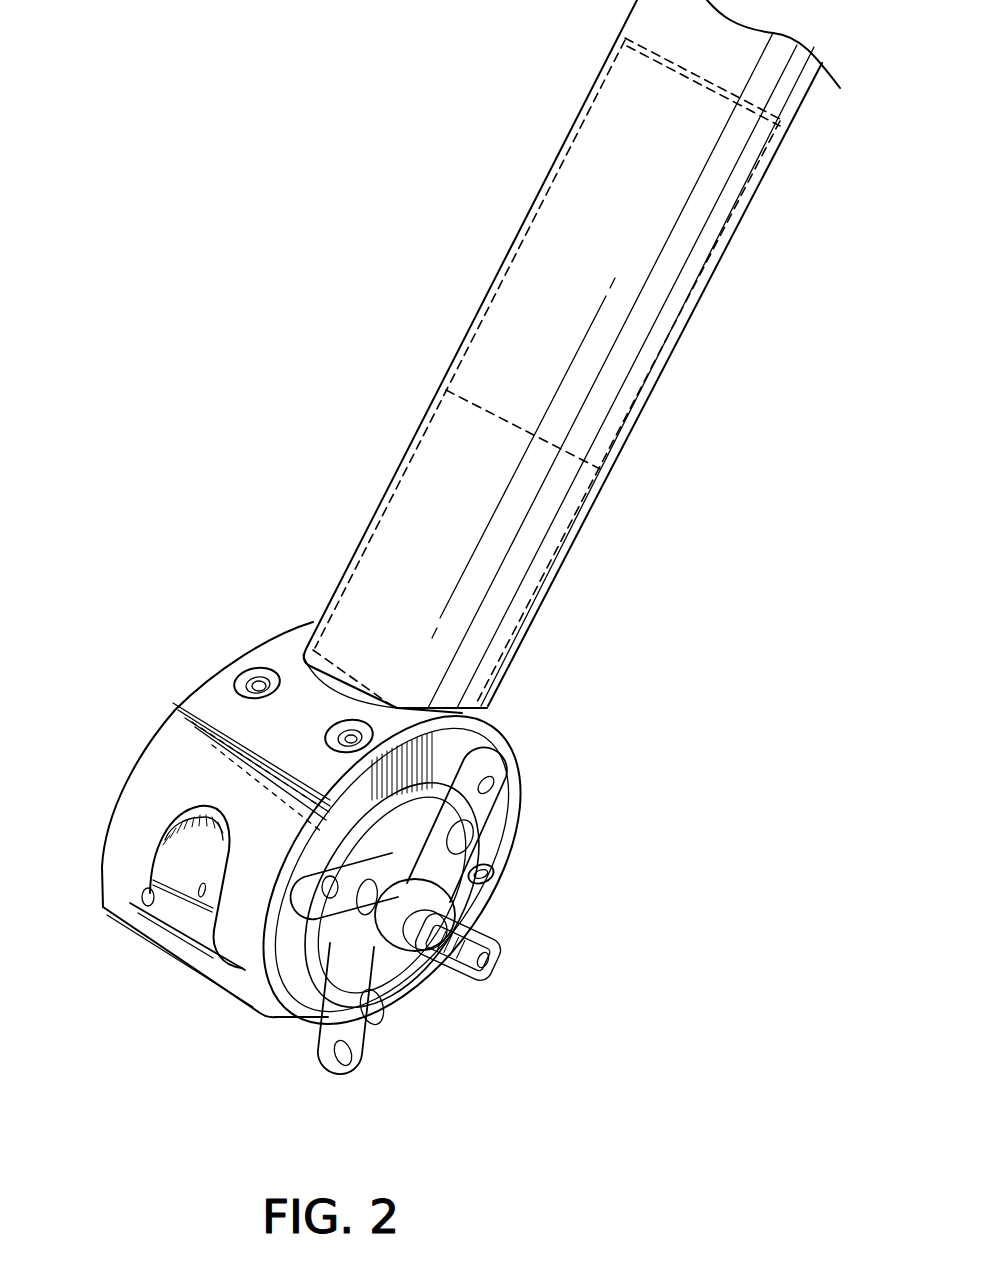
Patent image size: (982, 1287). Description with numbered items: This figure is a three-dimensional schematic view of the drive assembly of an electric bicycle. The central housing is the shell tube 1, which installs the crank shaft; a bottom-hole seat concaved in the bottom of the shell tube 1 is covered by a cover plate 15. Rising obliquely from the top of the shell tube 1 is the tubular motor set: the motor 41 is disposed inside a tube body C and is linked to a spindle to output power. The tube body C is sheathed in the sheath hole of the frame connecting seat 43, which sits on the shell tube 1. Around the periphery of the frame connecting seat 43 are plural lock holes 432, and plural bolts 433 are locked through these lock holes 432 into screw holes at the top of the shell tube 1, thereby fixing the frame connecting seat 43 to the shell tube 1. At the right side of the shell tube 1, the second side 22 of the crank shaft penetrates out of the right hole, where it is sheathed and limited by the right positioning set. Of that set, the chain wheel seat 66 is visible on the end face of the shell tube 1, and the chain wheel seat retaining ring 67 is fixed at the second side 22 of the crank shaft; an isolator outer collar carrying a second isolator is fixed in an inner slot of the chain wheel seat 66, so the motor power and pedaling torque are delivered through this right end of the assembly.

The tube body C is at (481, 305).
The motor 41 is at (418, 493).
The frame connecting seat 43 is at (208, 710).
The lock holes 432 is at (247, 672).
The bolts 433 is at (263, 677).
The shell tube 1 is at (200, 853).
The cover plate 15 is at (178, 945).
The chain wheel seat 66 is at (393, 980).
The second side 22 is at (423, 947).
The chain wheel seat retaining ring 67 is at (470, 875).